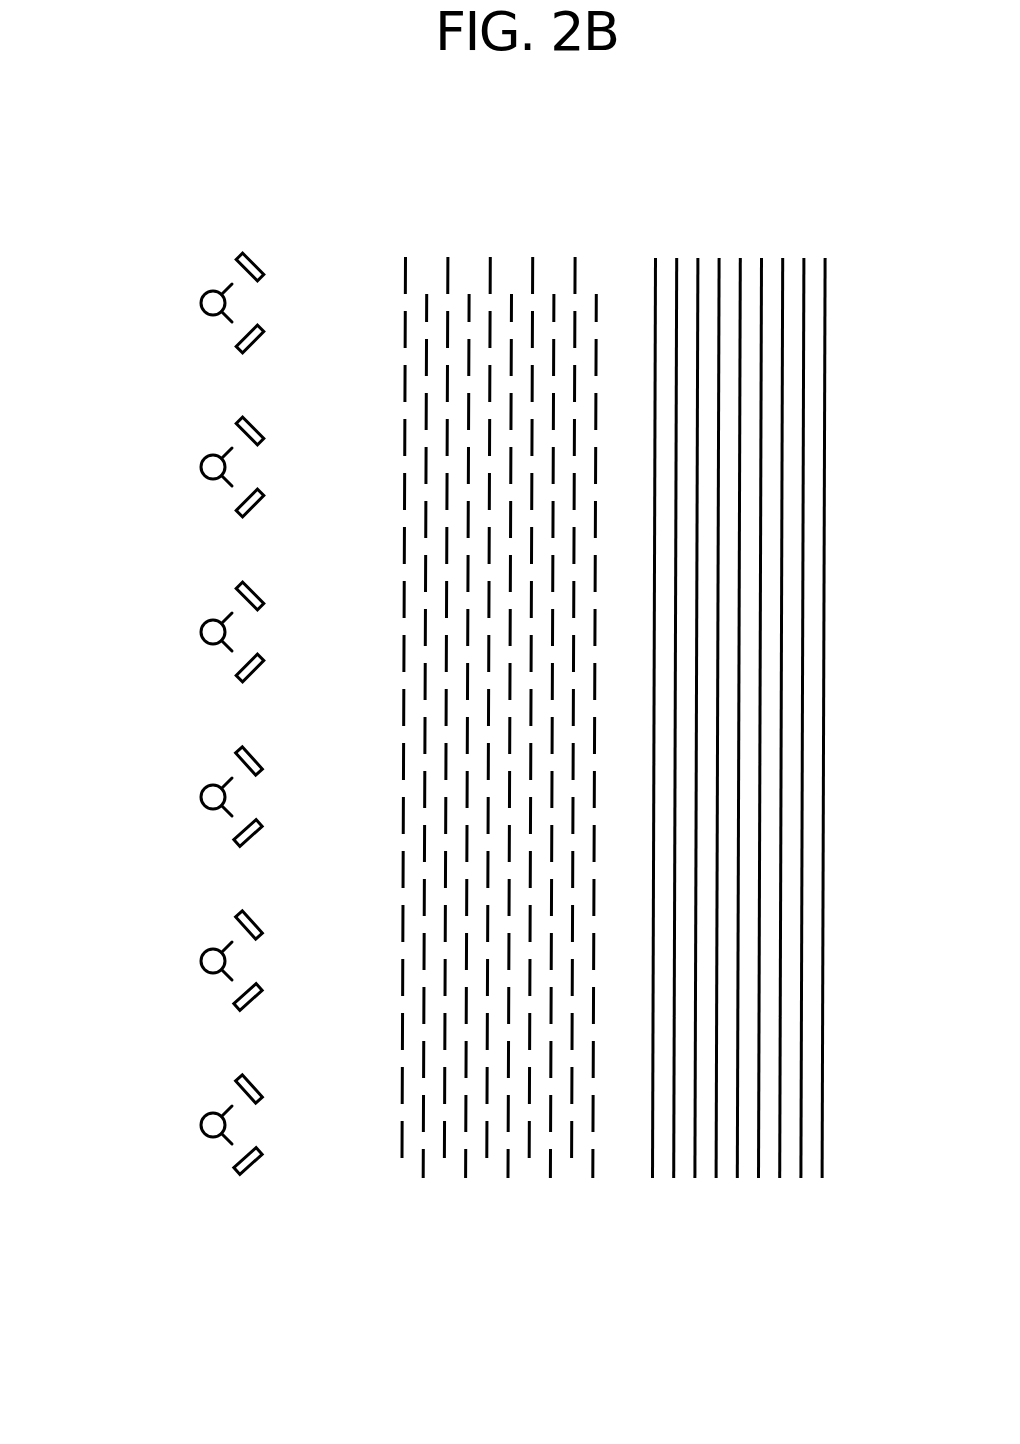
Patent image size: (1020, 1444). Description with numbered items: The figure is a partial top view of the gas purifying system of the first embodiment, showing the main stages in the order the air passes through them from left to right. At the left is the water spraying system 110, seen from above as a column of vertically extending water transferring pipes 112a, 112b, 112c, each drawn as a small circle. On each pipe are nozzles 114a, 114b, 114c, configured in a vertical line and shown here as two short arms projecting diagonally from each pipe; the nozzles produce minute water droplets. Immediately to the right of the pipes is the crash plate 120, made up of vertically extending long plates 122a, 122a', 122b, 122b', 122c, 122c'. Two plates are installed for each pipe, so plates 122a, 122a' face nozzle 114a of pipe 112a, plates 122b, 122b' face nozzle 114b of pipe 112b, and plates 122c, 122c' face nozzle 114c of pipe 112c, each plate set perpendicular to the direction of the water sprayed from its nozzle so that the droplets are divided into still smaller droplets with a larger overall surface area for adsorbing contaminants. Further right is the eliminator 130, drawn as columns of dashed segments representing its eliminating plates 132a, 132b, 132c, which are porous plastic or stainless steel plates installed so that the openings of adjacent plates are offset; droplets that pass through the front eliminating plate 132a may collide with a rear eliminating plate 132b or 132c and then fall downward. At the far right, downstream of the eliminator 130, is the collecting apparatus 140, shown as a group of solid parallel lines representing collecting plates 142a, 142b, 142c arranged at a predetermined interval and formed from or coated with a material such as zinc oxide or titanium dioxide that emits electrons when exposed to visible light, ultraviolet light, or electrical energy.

The water spraying system 110 is at (201, 280).
The crash plate 120 is at (262, 238).
The eliminator 130 is at (511, 240).
The collecting apparatus 140 is at (749, 240).
The water transferring pipe 112a is at (201, 303).
The water transferring pipe 112b is at (201, 467).
The water transferring pipe 112c is at (201, 632).
The nozzle 114a is at (229, 285).
The nozzle 114b is at (229, 449).
The nozzle 114c is at (229, 614).
The long plate 122a is at (310, 262).
The long plate 122a' is at (316, 337).
The long plate 122b is at (310, 427).
The long plate 122b' is at (316, 495).
The long plate 122c is at (310, 592).
The long plate 122c' is at (316, 660).
The eliminating plate 132a is at (402, 1140).
The eliminating plate 132b is at (423, 1163).
The eliminating plate 132c is at (443, 1150).
The collecting plate 142a is at (651, 1140).
The collecting plate 142b is at (673, 1170).
The collecting plate 142c is at (693, 1157).